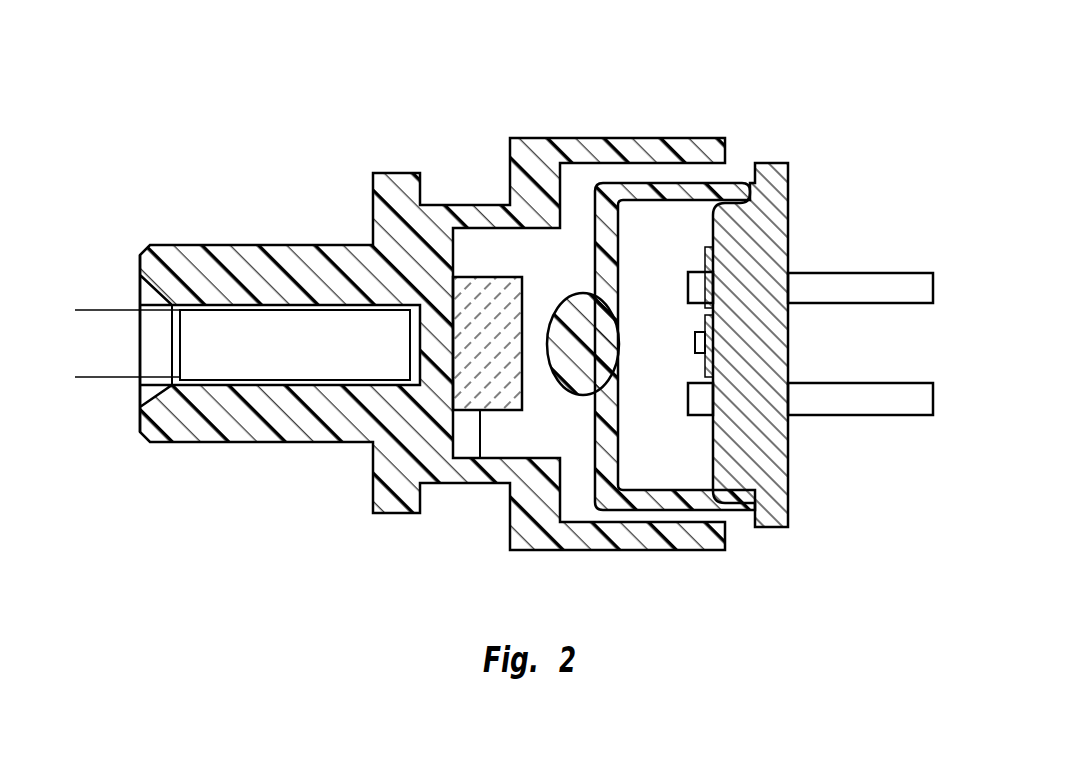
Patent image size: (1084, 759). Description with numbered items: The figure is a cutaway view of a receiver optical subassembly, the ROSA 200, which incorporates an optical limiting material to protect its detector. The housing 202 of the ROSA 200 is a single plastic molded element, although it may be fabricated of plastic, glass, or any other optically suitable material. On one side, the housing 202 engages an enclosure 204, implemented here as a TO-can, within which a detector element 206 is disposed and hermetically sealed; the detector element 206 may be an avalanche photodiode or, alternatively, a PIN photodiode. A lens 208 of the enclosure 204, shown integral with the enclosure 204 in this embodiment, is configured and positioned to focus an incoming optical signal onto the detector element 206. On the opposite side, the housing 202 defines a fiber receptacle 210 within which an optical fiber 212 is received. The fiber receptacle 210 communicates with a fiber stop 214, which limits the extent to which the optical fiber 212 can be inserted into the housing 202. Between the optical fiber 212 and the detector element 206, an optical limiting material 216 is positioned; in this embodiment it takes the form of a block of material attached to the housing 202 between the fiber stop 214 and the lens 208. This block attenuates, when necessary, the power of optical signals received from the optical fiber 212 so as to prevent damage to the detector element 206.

The ROSA 200 is at (243, 82).
The housing 202 is at (397, 173).
The enclosure 204 is at (722, 182).
The detector element 206 is at (694, 340).
The lens 208 is at (573, 293).
The fiber receptacle 210 is at (328, 385).
The optical fiber 212 is at (217, 380).
The fiber stop 214 is at (452, 372).
The optical limiting material 216 is at (480, 412).